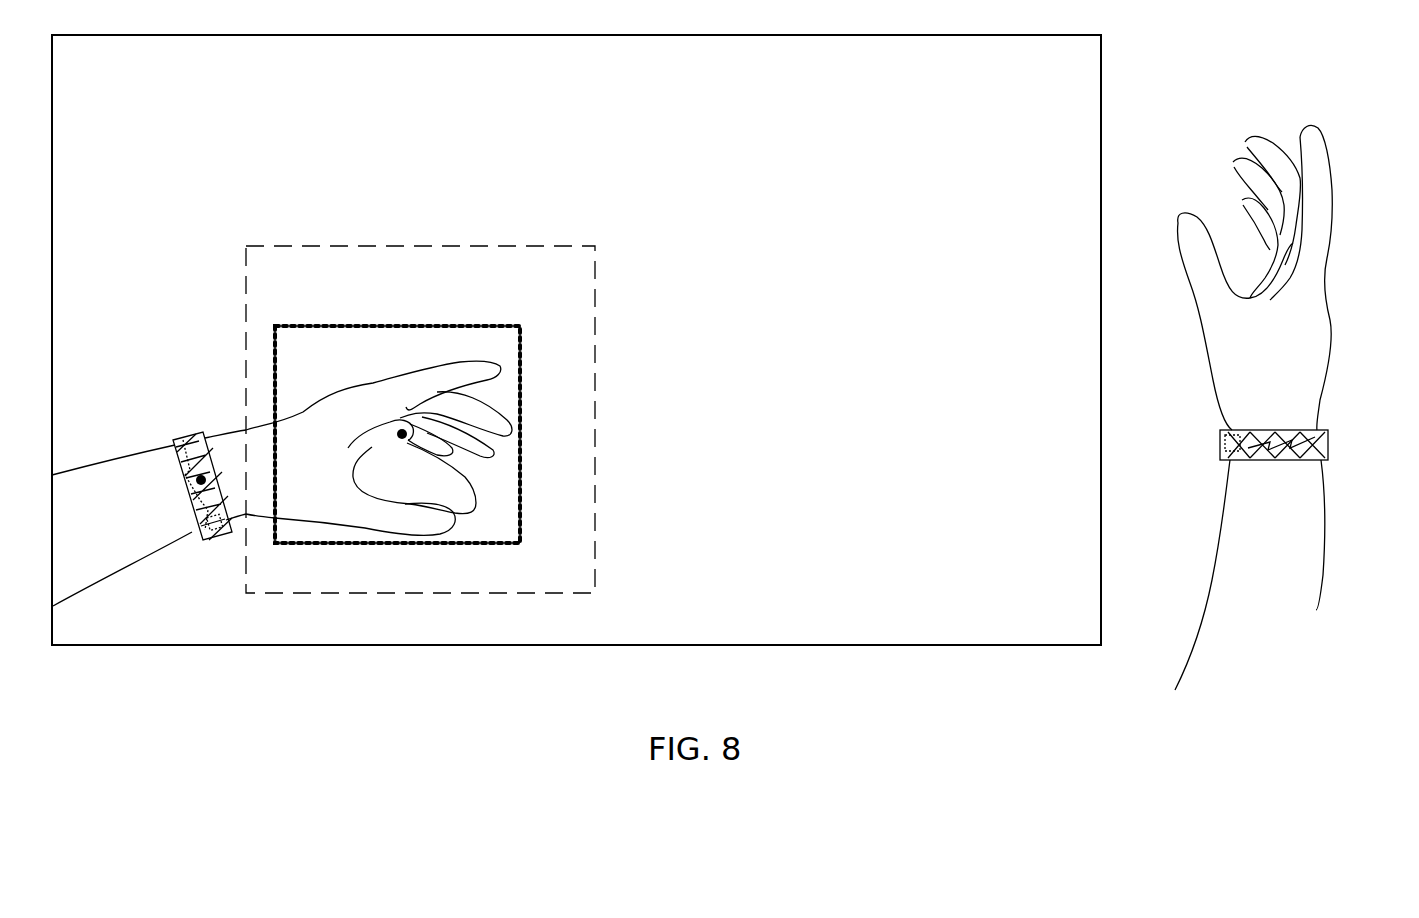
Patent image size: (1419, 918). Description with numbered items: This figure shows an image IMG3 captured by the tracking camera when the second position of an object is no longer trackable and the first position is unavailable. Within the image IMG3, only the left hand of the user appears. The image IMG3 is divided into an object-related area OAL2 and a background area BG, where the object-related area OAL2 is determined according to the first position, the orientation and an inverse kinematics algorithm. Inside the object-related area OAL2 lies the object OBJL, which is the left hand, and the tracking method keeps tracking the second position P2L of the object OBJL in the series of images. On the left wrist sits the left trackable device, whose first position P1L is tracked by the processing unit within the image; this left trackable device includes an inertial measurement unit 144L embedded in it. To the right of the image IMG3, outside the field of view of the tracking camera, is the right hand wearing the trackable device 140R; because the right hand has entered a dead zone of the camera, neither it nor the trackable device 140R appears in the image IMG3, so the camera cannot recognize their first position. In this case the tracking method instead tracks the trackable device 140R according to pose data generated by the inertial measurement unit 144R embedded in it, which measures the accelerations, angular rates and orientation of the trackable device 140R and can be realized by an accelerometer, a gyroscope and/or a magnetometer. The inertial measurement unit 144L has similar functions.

The image IMG3 is at (1101, 97).
The background area BG is at (232, 128).
The object-related area OAL2 is at (350, 246).
The object OBJL is at (430, 326).
The first position P1L is at (149, 526).
The second position P2L is at (407, 437).
The inertial measurement unit 144L is at (213, 538).
The trackable device 140R is at (1268, 407).
The inertial measurement unit 144R is at (1232, 455).